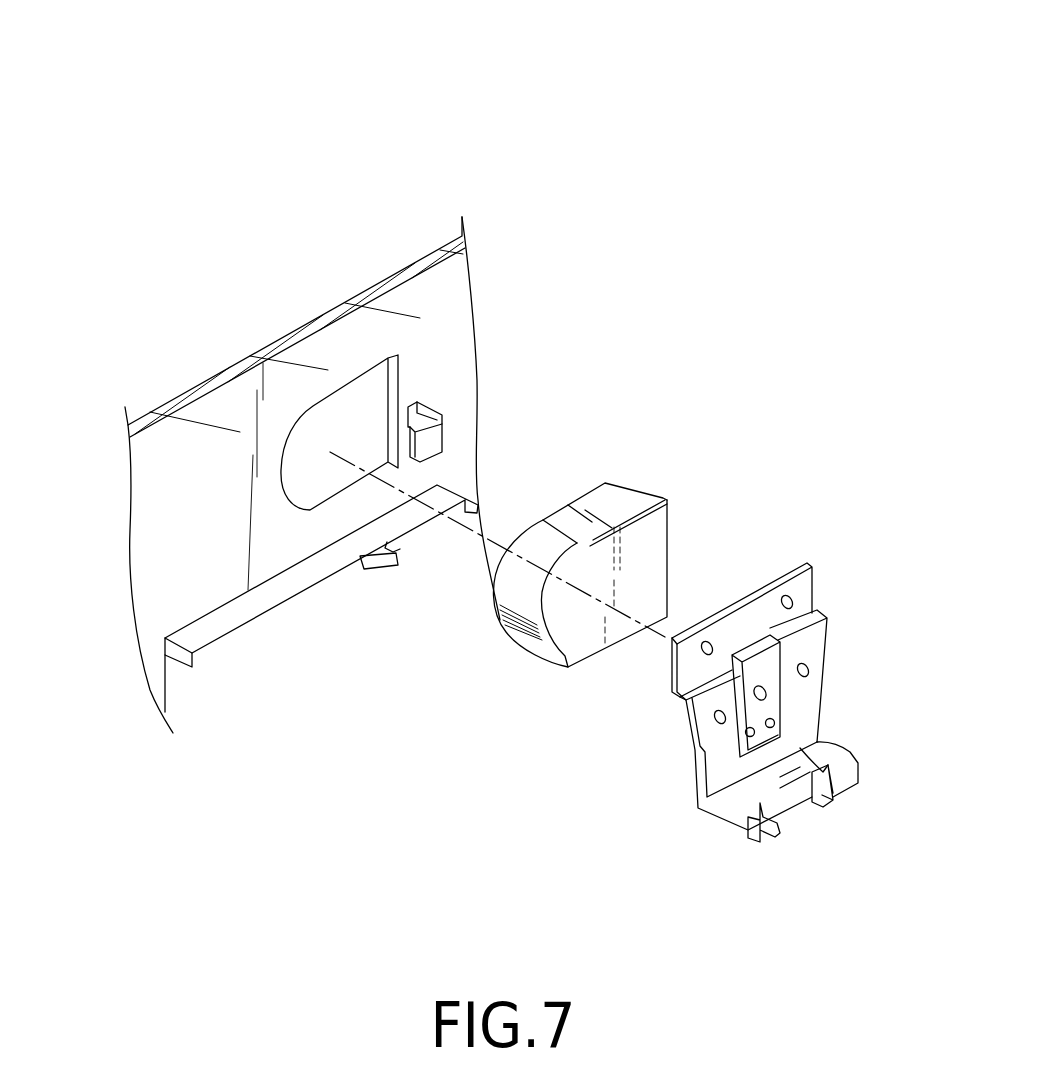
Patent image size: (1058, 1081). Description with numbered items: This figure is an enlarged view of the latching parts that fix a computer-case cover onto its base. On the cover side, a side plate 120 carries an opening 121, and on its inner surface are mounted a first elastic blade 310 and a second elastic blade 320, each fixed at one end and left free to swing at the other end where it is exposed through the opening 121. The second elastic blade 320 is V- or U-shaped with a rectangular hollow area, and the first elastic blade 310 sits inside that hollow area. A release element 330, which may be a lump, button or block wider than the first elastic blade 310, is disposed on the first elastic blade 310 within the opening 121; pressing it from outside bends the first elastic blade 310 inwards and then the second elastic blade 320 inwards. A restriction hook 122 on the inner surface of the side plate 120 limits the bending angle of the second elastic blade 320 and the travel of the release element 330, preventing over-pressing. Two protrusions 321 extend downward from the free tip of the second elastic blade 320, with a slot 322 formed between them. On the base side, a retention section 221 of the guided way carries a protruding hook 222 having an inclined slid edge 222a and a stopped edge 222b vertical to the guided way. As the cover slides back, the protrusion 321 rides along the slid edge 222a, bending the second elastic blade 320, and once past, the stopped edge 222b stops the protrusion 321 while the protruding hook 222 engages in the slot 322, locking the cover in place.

The side plate 120 is at (435, 307).
The opening 121 is at (332, 423).
The restriction hook 122 is at (442, 433).
The retention section 221 is at (213, 617).
The protruding hook 222 is at (385, 640).
The slid edge 222a is at (373, 572).
The stopped edge 222b is at (405, 548).
The release element 330 is at (605, 498).
The first elastic blade 310 is at (760, 661).
The second elastic blade 320 is at (817, 648).
The protrusion 321 is at (777, 833).
The slot 322 is at (820, 735).